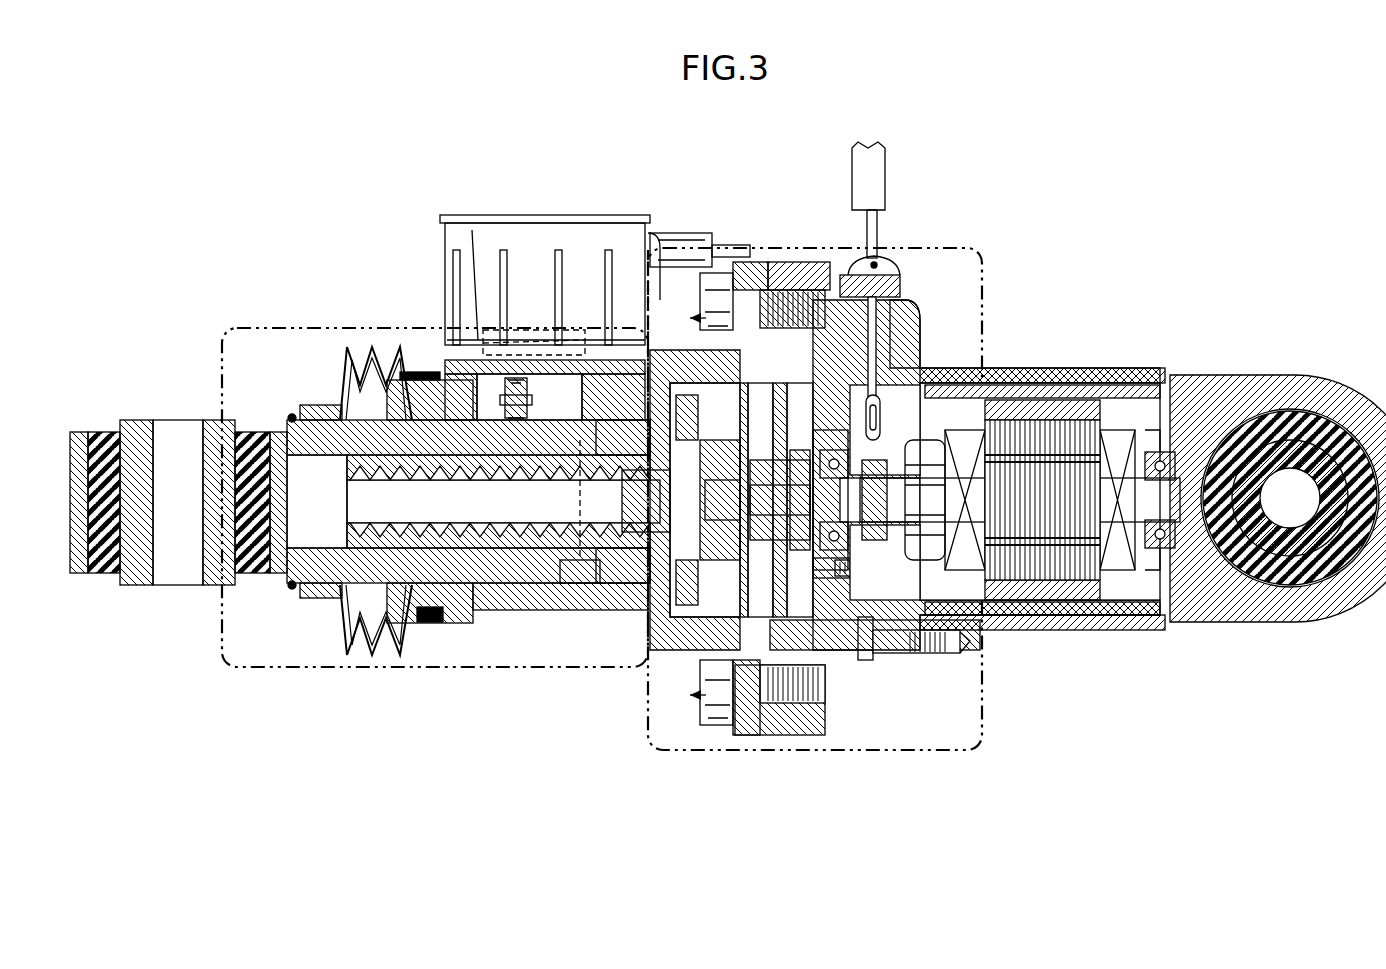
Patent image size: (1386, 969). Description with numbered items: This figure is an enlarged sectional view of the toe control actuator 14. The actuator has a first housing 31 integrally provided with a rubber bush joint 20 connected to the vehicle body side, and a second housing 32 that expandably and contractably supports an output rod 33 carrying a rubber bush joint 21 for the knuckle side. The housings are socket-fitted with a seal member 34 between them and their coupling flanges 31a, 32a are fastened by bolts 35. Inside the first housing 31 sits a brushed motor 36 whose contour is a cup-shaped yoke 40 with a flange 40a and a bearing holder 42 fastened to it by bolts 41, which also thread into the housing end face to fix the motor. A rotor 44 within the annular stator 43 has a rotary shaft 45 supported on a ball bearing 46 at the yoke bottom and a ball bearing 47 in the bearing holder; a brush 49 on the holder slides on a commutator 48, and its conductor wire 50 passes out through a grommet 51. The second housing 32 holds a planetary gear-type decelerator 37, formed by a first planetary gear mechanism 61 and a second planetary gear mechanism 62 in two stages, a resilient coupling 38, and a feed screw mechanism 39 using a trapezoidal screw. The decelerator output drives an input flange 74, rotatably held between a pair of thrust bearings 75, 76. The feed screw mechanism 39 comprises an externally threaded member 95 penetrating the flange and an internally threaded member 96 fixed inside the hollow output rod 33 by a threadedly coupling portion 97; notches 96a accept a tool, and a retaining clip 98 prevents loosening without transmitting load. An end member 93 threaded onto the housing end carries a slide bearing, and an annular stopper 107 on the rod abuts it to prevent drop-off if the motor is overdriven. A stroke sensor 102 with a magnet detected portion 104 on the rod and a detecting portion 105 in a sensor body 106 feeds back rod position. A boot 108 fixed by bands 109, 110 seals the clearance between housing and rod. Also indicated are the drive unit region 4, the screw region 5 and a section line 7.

The drive unit 4 is at (987, 246).
The screw mechanism unit 5 is at (398, 326).
The section line 7 is at (689, 511).
The toe control actuator 14 is at (678, 202).
The rubber bush joint 20 is at (1300, 405).
The rubber bush joint 21 is at (132, 420).
The first housing 31 is at (1113, 366).
The coupling flange 31a is at (815, 262).
The second housing 32 is at (595, 612).
The coupling flange 32a is at (752, 262).
The output rod 33 is at (362, 592).
The seal member 34 is at (752, 736).
The bolt 35 is at (712, 272).
The brushed motor 36 is at (1075, 368).
The planetary gear-type decelerator 37 is at (822, 650).
The coupling 38 is at (640, 600).
The feed screw mechanism 39 is at (490, 600).
The yoke 40 is at (1136, 628).
The flange 40a is at (918, 352).
The bolt 41 is at (898, 656).
The bearing holder 42 is at (902, 293).
The stator 43 is at (1032, 398).
The rotor 44 is at (1060, 582).
The rotary shaft 45 is at (848, 500).
The ball bearing 46 is at (1163, 548).
The ball bearing 47 is at (826, 452).
The commutator 48 is at (898, 522).
The brush 49 is at (915, 418).
The conductor wire 50 is at (873, 200).
The grommet 51 is at (882, 262).
The first planetary gear mechanism 61 is at (810, 587).
The second planetary gear mechanism 62 is at (757, 428).
The input flange 74 is at (640, 490).
The thrust bearing 75 is at (665, 632).
The thrust bearing 76 is at (700, 646).
The end member 93 is at (398, 400).
The externally threaded member 95 is at (398, 462).
The internally threaded member 96 is at (478, 460).
The notch 96a is at (565, 458).
The threadedly coupling portion 97 is at (432, 623).
The retaining clip 98 is at (576, 588).
The stroke sensor 102 is at (578, 212).
The detected portion 104 is at (576, 345).
The detecting portion 105 is at (516, 338).
The sensor body 106 is at (523, 238).
The stopper 107 is at (502, 596).
The boot 108 is at (352, 345).
The band 109 is at (432, 362).
The band 110 is at (320, 405).